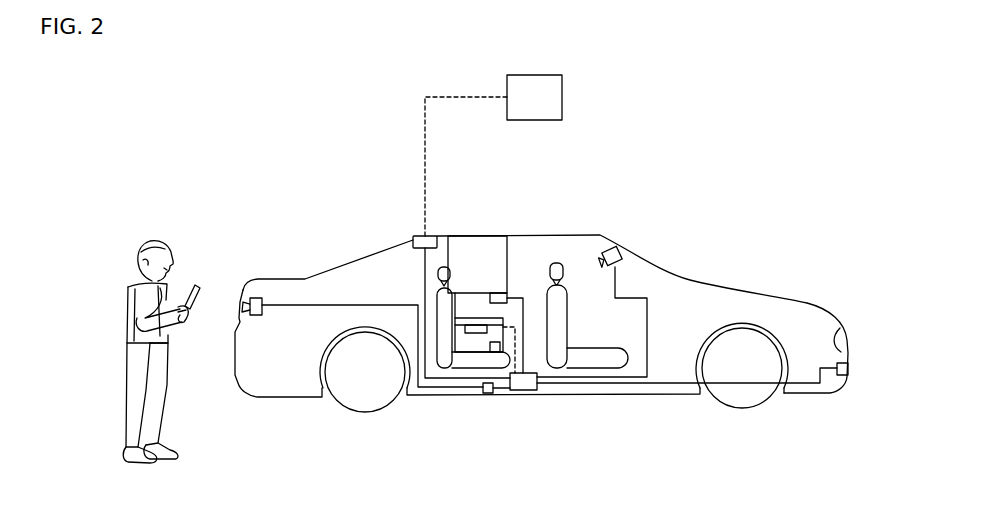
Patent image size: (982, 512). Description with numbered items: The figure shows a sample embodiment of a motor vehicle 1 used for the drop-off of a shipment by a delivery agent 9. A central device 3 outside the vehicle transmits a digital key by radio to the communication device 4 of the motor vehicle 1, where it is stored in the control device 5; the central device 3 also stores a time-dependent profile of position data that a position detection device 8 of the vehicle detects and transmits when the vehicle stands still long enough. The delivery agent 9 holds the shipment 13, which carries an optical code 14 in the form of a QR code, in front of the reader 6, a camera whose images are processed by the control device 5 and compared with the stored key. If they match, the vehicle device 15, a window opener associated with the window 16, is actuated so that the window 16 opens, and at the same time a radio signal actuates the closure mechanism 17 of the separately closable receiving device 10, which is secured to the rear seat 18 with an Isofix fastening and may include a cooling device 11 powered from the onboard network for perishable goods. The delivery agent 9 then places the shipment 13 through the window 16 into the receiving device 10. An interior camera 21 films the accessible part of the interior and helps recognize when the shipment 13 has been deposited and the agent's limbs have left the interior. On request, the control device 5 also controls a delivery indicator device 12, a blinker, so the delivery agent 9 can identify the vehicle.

The motor vehicle 1 is at (682, 182).
The central device 3 is at (562, 92).
The communication device 4 is at (414, 239).
The control device 5 is at (527, 391).
The reader 6 is at (257, 297).
The position detection device 8 is at (488, 394).
The delivery agent 9 is at (160, 222).
The receiving device 10 is at (457, 320).
The cooling device 11 is at (494, 346).
The delivery indicator device 12 is at (840, 377).
The shipment 13 is at (197, 282).
The optical code 14 is at (198, 306).
The vehicle device 15 is at (507, 297).
The window 16 is at (498, 262).
The closure mechanism 17 is at (477, 330).
The rear seat 18 is at (444, 290).
The camera 21 is at (622, 253).